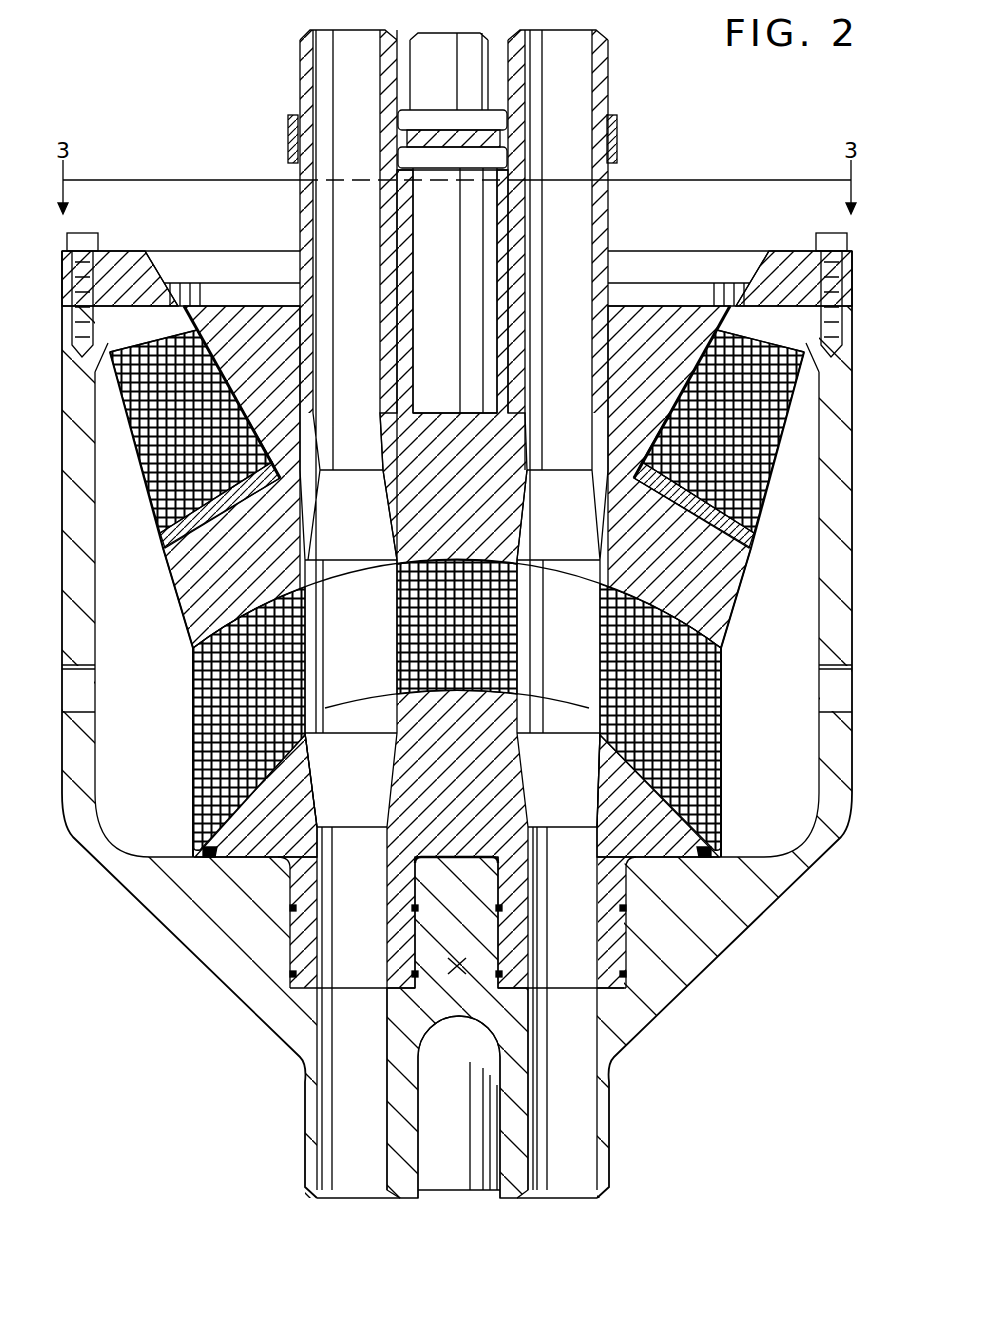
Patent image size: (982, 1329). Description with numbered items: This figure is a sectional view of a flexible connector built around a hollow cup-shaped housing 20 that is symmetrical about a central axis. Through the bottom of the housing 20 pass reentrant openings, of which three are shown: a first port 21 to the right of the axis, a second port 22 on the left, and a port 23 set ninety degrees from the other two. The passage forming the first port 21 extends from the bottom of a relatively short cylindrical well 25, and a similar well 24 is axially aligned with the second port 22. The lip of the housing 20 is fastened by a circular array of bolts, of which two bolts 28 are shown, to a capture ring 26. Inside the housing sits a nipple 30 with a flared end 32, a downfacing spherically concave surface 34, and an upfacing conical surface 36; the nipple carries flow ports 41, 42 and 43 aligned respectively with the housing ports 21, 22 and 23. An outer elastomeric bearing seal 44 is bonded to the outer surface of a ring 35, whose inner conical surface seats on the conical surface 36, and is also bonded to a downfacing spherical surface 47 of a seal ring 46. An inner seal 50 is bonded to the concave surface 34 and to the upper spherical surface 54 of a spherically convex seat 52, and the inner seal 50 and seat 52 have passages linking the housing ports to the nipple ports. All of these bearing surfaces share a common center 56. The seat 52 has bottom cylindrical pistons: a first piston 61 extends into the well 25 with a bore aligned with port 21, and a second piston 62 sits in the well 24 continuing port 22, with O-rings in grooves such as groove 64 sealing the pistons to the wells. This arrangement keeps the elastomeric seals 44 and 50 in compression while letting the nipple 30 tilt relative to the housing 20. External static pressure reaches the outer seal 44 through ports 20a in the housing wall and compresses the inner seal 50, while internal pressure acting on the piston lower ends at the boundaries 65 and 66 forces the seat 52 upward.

The housing 20 is at (842, 528).
The ports 20a is at (100, 694).
The first port 21 is at (565, 1192).
The second port 22 is at (355, 1192).
The port 23 is at (445, 1192).
The well 24 is at (292, 952).
The well 25 is at (626, 930).
The capture ring 26 is at (664, 262).
The bolts 28 is at (80, 236).
The nipple 30 is at (415, 487).
The flared end 32 is at (178, 590).
The spherically concave surface 34 is at (370, 582).
The ring 35 is at (168, 542).
The conical surface 36 is at (276, 470).
The port 41 is at (579, 101).
The port 42 is at (368, 101).
The port 43 is at (445, 76).
The outer elastomeric bearing seal 44 is at (712, 372).
The seal ring 46 is at (152, 322).
The surface 47 is at (180, 336).
The inner seal 50 is at (200, 748).
The seat 52 is at (215, 836).
The upper spherical surface 54 is at (332, 705).
The center 56 is at (458, 972).
The first piston 61 is at (520, 912).
The second piston 62 is at (400, 896).
The groove 64 is at (505, 978).
The boundary 65 is at (565, 985).
The boundary 66 is at (352, 985).